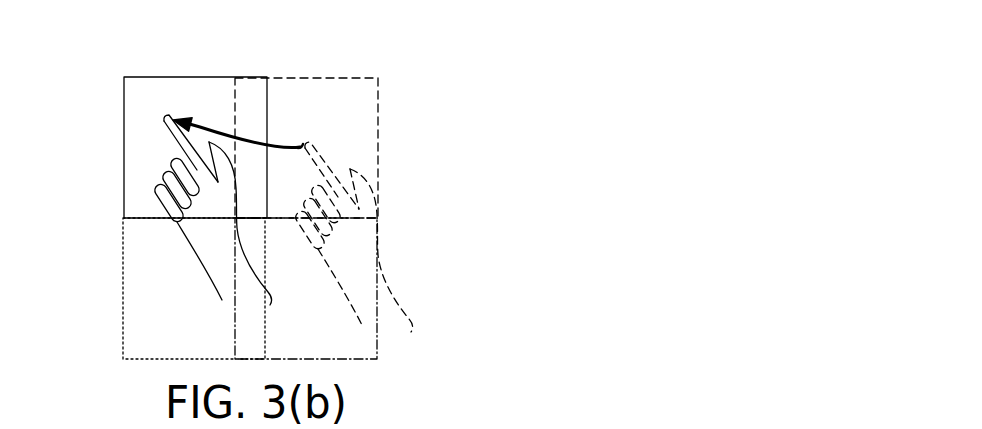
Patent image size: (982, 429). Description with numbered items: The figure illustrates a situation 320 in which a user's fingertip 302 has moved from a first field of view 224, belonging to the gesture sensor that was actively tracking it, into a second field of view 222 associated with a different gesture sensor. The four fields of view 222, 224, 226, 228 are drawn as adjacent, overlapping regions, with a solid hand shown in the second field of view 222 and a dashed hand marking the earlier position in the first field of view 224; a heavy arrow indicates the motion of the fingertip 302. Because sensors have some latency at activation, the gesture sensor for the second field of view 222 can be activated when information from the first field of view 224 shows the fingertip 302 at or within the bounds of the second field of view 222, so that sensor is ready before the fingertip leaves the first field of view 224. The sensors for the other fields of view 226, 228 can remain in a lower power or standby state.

The second field of view 222 is at (123, 110).
The first field of view 224 is at (378, 108).
The field of view 226 is at (122, 285).
The field of view 228 is at (376, 345).
The fingertip 302 is at (173, 117).
The situation 320 is at (600, 112).